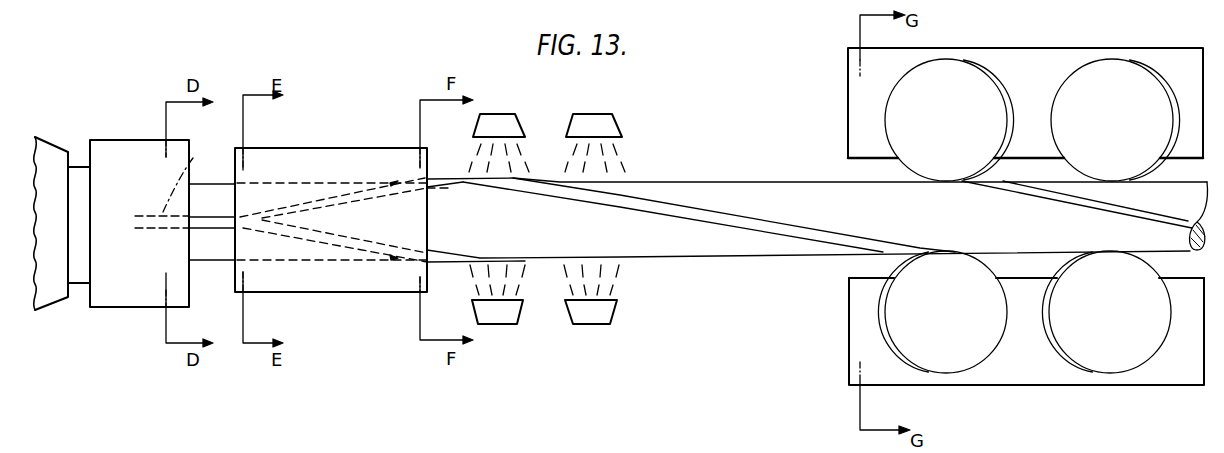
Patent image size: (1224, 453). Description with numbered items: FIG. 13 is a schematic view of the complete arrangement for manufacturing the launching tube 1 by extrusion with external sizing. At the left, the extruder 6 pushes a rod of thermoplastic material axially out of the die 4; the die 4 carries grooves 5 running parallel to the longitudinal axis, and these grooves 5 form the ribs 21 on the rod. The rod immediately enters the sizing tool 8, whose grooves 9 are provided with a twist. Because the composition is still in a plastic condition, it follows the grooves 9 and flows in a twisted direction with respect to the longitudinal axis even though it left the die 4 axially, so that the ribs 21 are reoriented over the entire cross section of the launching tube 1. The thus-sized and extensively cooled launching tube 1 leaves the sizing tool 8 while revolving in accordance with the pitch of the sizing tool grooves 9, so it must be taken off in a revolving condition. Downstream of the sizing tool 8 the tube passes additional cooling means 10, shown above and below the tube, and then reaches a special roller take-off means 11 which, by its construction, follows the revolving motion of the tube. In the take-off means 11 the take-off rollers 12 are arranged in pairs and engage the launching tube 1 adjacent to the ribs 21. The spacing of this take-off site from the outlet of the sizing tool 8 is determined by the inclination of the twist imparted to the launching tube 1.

The launching tube 1 is at (218, 254).
The die 4 is at (133, 148).
The grooves 5 is at (192, 160).
The extruder 6 is at (53, 301).
The sizing tool 8 is at (383, 285).
The grooves 9 is at (305, 200).
The cooling means 10 is at (583, 323).
The roller take-off means 11 is at (1168, 372).
The take-off rollers 12 is at (1095, 362).
The ribs 21 is at (752, 228).